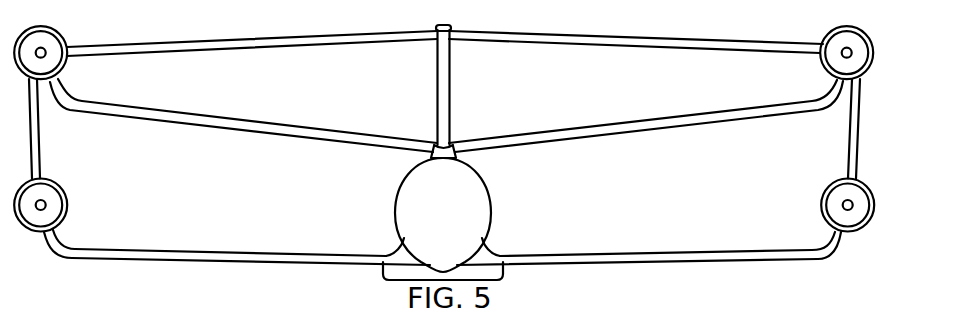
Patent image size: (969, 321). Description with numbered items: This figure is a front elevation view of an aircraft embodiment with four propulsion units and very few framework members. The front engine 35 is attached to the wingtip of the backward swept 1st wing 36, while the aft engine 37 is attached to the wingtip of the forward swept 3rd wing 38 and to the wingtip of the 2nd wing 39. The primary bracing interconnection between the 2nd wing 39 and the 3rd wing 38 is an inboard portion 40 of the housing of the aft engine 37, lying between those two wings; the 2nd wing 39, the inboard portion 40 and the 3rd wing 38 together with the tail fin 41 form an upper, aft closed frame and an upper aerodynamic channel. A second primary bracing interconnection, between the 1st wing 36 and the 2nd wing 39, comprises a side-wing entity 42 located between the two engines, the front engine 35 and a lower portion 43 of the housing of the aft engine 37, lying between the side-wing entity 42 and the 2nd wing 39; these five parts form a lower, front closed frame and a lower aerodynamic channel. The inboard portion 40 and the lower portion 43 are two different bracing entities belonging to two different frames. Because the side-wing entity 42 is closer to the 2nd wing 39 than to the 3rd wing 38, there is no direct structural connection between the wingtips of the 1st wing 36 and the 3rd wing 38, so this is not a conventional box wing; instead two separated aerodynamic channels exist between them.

The front engine 35 is at (837, 200).
The 1st wing 36 is at (657, 255).
The aft engine 37 is at (820, 25).
The 3rd wing 38 is at (638, 44).
The 2nd wing 39 is at (707, 120).
The inboard portion of the engine housing 40 is at (825, 68).
The tail fin 41 is at (445, 83).
The side-wing entity 42 is at (858, 125).
The lower portion of the engine housing 43 is at (846, 83).